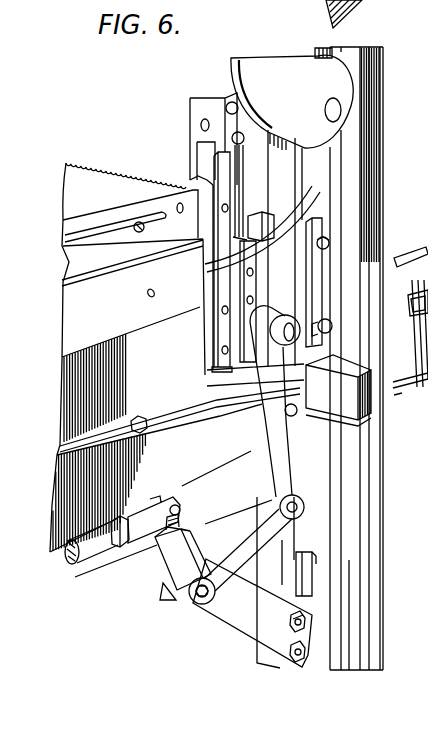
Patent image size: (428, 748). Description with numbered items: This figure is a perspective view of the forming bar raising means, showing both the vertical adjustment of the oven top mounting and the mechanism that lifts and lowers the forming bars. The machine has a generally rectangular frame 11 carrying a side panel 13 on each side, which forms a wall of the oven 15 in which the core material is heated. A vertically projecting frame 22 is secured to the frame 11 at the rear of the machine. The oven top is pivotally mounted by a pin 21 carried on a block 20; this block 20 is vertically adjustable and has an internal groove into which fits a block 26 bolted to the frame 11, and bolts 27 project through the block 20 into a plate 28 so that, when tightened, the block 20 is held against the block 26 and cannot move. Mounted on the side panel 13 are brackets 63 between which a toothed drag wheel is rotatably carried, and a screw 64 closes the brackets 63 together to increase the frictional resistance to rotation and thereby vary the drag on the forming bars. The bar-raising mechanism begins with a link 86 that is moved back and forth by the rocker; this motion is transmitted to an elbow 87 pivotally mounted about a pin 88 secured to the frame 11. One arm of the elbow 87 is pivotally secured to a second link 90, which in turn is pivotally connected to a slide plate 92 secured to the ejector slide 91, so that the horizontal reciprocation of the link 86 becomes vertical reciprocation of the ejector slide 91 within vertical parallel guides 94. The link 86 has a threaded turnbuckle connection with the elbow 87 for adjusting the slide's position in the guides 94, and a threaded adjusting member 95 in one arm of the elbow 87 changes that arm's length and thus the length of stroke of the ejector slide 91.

The frame 11 is at (241, 618).
The side panel 13 is at (177, 381).
The oven 15 is at (89, 157).
The block 20 is at (314, 153).
The pin 21 is at (340, 111).
The vertically projecting frame 22 is at (375, 62).
The block 26 is at (266, 213).
The bolt 27 is at (330, 246).
The plate 28 is at (320, 229).
The bracket 63 is at (427, 362).
The screw 64 is at (420, 331).
The link 86 is at (85, 563).
The elbow 87 is at (260, 528).
The pin 88 is at (203, 605).
The second link 90 is at (276, 421).
The ejector slide 91 is at (202, 105).
The slide plate 92 is at (243, 292).
The vertical parallel guides 94 is at (215, 158).
The threaded adjusting member 95 is at (157, 547).